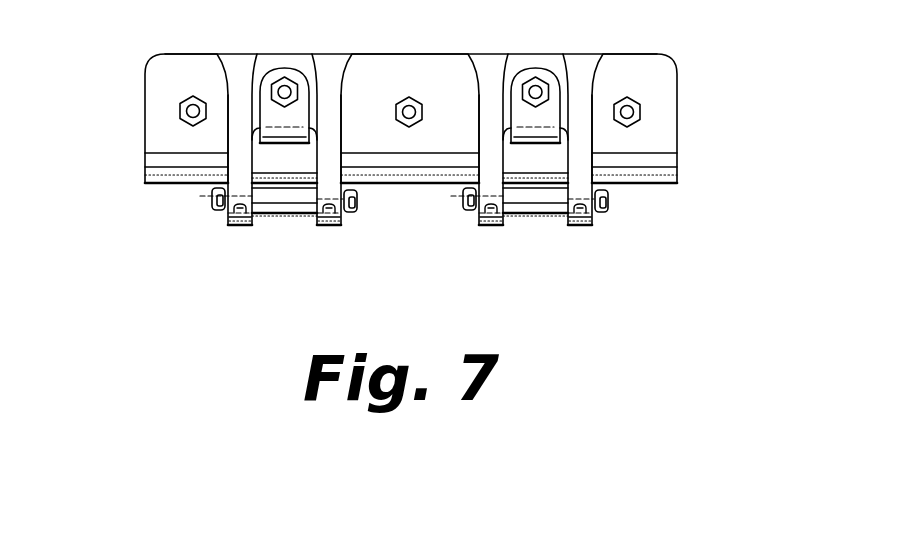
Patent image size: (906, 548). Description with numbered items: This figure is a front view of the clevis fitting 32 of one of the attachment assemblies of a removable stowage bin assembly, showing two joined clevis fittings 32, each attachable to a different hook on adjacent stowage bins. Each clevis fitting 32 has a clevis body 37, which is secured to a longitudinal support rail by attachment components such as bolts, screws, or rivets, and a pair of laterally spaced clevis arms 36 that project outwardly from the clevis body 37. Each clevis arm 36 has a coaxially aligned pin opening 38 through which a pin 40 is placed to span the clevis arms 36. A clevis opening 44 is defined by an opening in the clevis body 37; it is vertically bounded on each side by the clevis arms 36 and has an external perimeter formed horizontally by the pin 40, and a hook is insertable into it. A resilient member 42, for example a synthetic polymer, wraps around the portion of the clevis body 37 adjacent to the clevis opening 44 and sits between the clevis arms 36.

The clevis fitting 32 is at (112, 219).
The clevis arms 36 is at (238, 228).
The clevis body 37 is at (677, 135).
The pin opening 38 is at (237, 212).
The pin 40 is at (212, 197).
The resilient member 42 is at (270, 67).
The clevis opening 44 is at (300, 157).